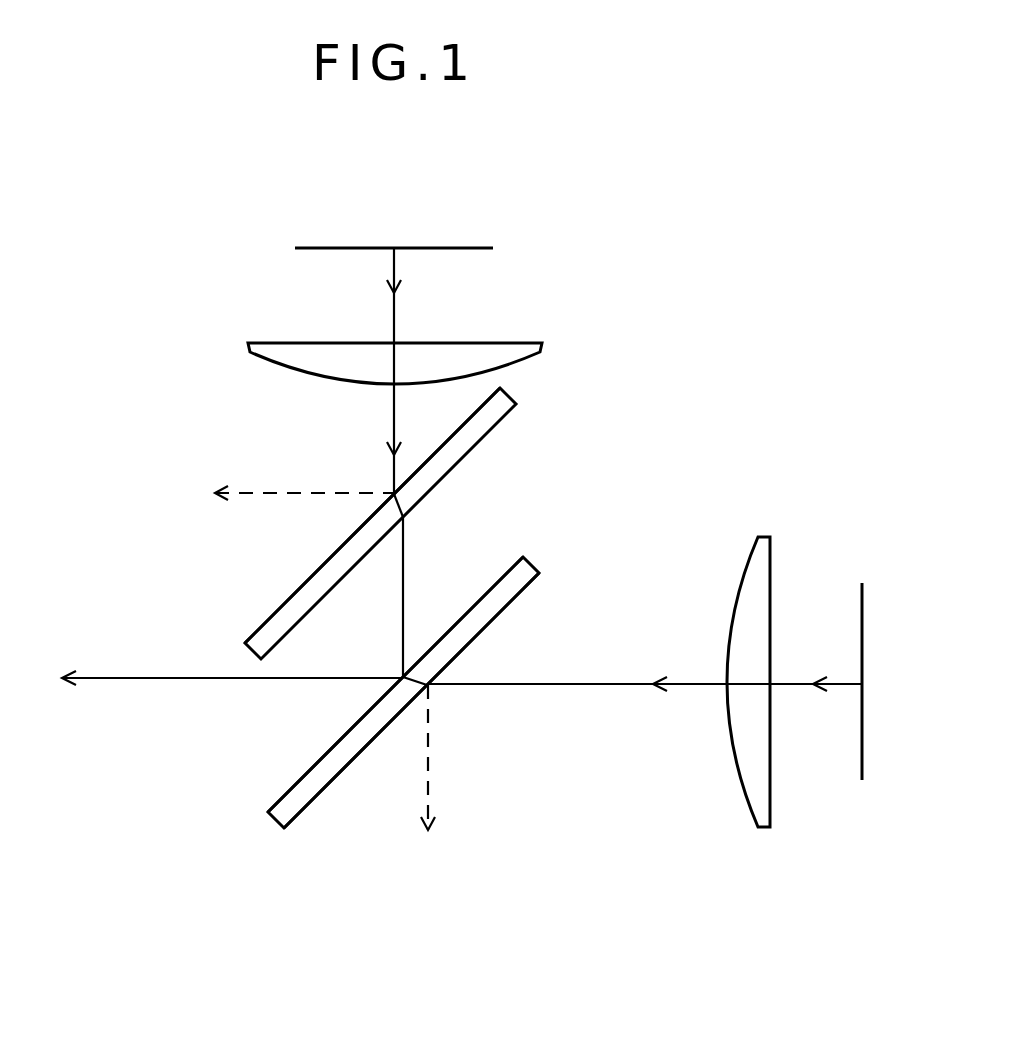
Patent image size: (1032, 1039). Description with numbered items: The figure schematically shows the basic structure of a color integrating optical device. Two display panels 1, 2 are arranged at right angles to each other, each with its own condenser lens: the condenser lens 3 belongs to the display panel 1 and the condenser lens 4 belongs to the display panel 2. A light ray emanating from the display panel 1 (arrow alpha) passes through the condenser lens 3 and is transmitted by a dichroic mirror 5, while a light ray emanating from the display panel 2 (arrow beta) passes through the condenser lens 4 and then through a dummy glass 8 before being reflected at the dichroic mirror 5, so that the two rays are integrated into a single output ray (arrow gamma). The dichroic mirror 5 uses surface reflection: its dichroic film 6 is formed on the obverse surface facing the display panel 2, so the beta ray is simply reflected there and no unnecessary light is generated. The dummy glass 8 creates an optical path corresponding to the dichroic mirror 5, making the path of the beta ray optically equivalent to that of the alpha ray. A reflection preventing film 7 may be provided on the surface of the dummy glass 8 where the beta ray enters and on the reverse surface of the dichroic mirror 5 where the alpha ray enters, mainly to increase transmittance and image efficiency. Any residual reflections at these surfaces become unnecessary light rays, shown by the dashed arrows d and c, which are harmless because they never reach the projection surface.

The display panel 1 is at (862, 732).
The display panel 2 is at (440, 248).
The condenser lens 3 is at (745, 782).
The condenser lens 4 is at (537, 342).
The dichroic mirror 5 is at (272, 808).
The dichroic film 6 is at (481, 600).
The reflection preventing film 7 is at (278, 607).
The dummy glass 8 is at (480, 440).
The unnecessary light ray c is at (430, 753).
The unnecessary light ray d is at (283, 493).